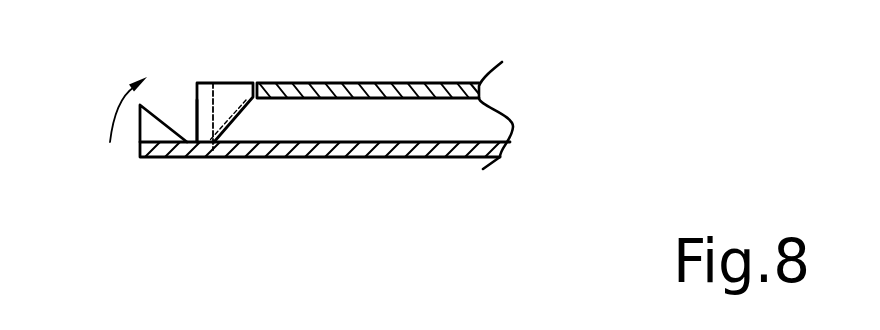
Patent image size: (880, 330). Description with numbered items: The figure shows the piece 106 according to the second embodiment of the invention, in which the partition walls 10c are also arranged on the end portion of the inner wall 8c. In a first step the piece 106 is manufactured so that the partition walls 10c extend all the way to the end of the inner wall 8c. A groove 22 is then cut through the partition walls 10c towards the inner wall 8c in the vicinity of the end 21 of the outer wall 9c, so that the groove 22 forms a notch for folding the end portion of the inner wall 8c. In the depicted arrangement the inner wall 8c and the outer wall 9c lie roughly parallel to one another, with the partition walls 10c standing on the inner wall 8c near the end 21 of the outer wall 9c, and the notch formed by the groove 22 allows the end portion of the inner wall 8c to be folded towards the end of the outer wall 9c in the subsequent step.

The inner wall 8c is at (266, 153).
The outer wall 9c is at (385, 88).
The end of the outer wall 21 is at (260, 83).
The groove 22 is at (172, 86).
The partition walls 10c is at (140, 137).
The piece 106 is at (390, 204).